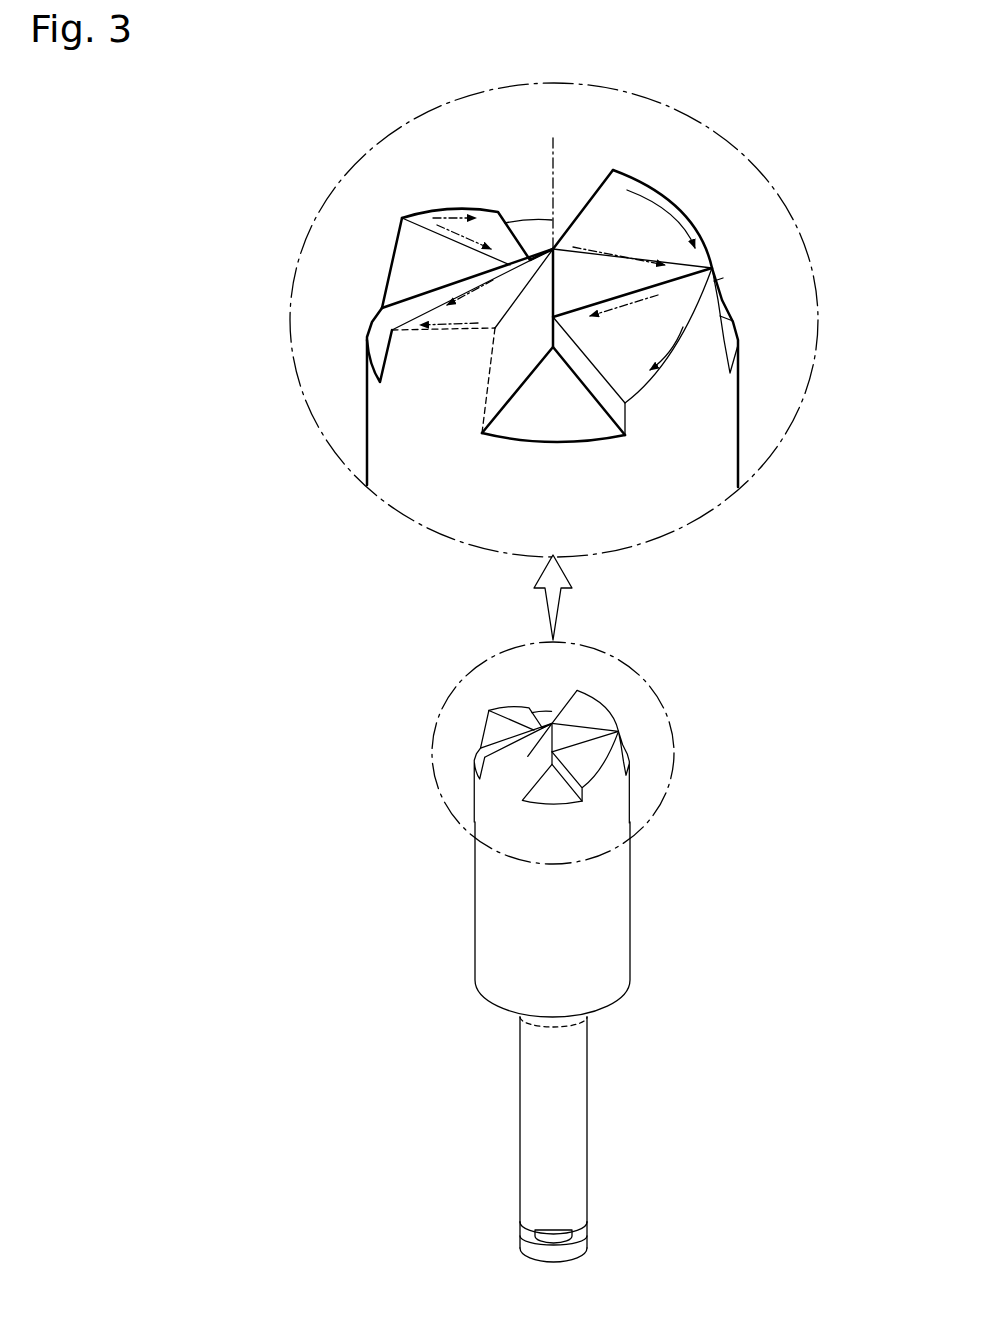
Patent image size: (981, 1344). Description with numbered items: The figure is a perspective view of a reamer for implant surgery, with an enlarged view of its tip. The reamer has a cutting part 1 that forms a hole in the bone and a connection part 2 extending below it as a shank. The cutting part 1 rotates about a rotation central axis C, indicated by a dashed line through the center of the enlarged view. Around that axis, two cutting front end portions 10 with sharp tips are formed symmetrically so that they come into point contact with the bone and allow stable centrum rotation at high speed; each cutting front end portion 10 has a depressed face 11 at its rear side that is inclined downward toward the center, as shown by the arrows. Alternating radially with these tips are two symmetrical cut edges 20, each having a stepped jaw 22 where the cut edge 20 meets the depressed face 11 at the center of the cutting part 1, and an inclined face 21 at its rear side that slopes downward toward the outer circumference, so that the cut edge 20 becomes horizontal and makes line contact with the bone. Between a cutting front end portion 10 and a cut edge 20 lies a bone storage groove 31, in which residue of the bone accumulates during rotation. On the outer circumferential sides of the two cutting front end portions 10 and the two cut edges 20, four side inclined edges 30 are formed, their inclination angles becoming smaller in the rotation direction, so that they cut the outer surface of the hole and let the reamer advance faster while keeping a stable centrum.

The cutting part 1 is at (662, 875).
The connection part 2 is at (613, 1092).
The cutting front end portion 10 is at (402, 216).
The depressed face 11 is at (497, 210).
The cut edge 20 is at (582, 212).
The inclined face 21 is at (613, 187).
The stepped jaw 22 is at (553, 280).
The side inclined edge 30 is at (390, 268).
The bone storage groove 31 is at (383, 323).
The rotation central axis C is at (553, 182).